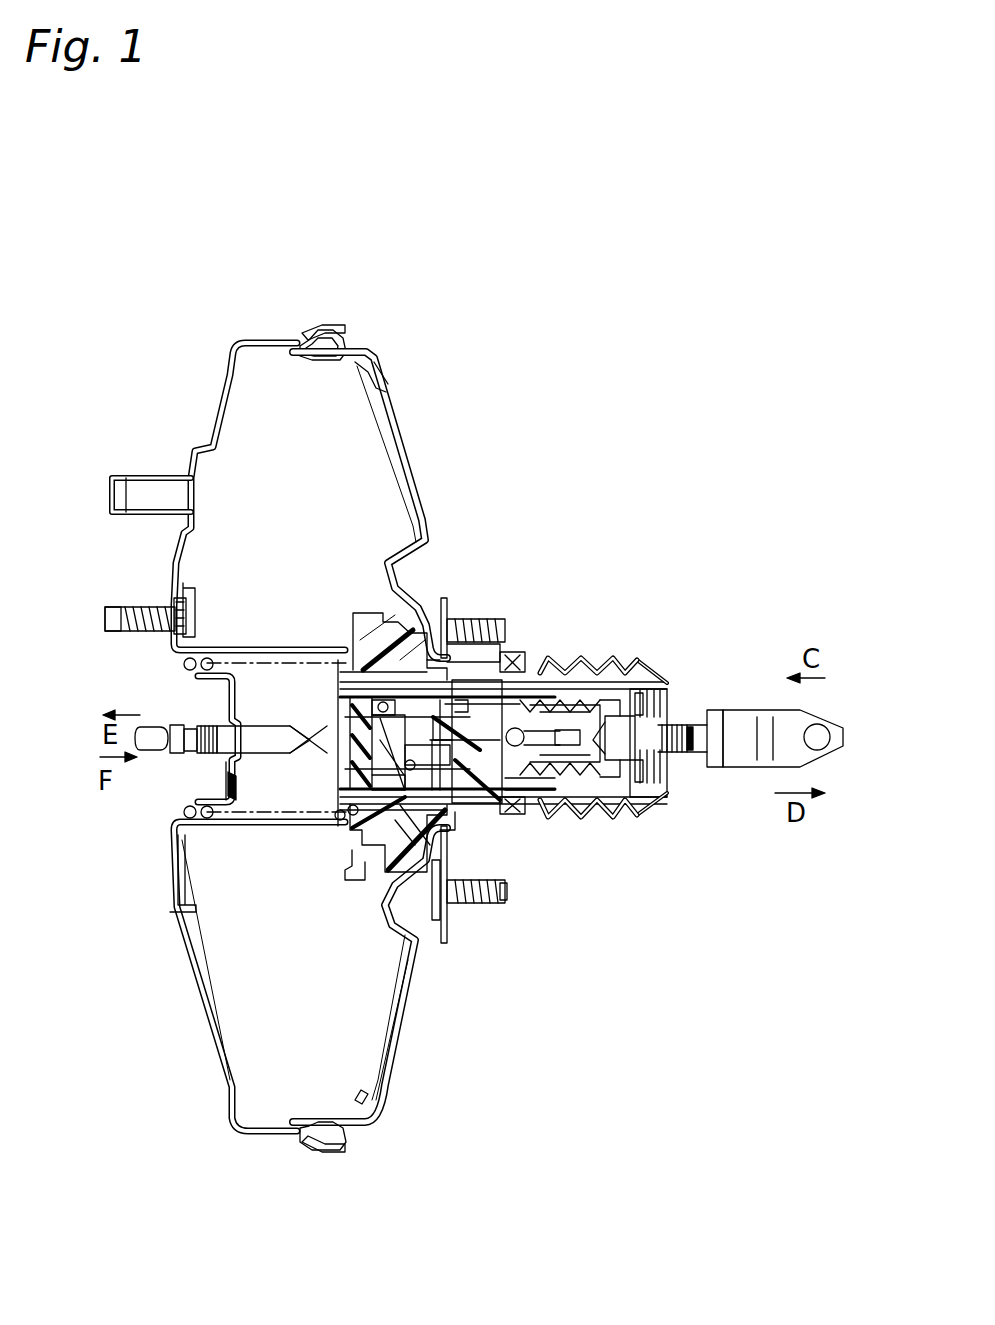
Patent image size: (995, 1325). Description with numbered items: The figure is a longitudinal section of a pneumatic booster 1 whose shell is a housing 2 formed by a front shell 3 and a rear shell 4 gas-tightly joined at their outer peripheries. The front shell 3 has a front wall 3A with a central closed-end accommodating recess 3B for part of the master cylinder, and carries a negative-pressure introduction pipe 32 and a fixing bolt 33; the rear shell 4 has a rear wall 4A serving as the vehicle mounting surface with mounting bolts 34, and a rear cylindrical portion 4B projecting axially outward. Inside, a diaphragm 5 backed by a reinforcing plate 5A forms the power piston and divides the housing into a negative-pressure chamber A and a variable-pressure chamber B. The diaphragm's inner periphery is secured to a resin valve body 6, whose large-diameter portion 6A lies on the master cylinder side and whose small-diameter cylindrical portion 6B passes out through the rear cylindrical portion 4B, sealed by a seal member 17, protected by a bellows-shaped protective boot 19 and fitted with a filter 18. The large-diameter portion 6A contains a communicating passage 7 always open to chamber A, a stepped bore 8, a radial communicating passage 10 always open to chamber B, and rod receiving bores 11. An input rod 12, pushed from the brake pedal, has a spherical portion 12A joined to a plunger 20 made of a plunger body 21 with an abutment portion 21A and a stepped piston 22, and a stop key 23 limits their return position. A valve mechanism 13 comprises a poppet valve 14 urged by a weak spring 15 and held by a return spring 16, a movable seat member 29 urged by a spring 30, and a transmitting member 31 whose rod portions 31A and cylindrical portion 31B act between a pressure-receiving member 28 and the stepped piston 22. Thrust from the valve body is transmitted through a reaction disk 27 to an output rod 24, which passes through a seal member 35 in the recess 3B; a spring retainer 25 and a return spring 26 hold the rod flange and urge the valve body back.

The pneumatic booster 1 is at (482, 358).
The housing 2 is at (258, 340).
The front shell 3 is at (228, 400).
The front wall 3A is at (176, 880).
The accommodating recess 3B is at (200, 675).
The rear shell 4 is at (395, 398).
The rear wall 4A is at (450, 915).
The rear cylindrical portion 4B is at (502, 650).
The diaphragm 5 is at (420, 458).
The reinforcing plate 5A is at (364, 358).
The valve body 6 is at (356, 622).
The large-diameter portion 6A is at (366, 870).
The small-diameter cylindrical portion 6B is at (600, 815).
The communicating passage 7 is at (395, 640).
The stepped bore 8 is at (383, 845).
The communicating passage 10 is at (490, 805).
The rod receiving bores 11 is at (490, 660).
The input rod 12 is at (700, 725).
The spherical portion 12A is at (530, 803).
The valve mechanism 13 is at (578, 682).
The poppet valve 14 is at (570, 805).
The weak spring 15 is at (600, 705).
The return spring 16 is at (640, 702).
The seal member 17 is at (522, 891).
The filter 18 is at (672, 785).
The protective boot 19 is at (645, 808).
The plunger 20 is at (466, 680).
The plunger body 21 is at (475, 803).
The abutment portion 21A is at (555, 695).
The stepped piston 22 is at (405, 757).
The stop key 23 is at (455, 812).
The output rod 24 is at (272, 752).
The spring retainer 25 is at (372, 705).
The return spring 26 is at (210, 652).
The reaction disk 27 is at (385, 735).
The pressure-receiving member 28 is at (350, 813).
The movable seat member 29 is at (522, 795).
The spring 30 is at (515, 685).
The transmitting member 31 is at (358, 692).
The rod portions 31A is at (448, 660).
The cylindrical portion 31B is at (372, 780).
The negative-pressure introduction pipe 32 is at (138, 478).
The fixing bolts 33 is at (125, 605).
The mounting bolts 34 is at (492, 905).
The seal member 35 is at (228, 776).
The negative-pressure chamber A is at (225, 1015).
The variable-pressure chamber B is at (422, 940).